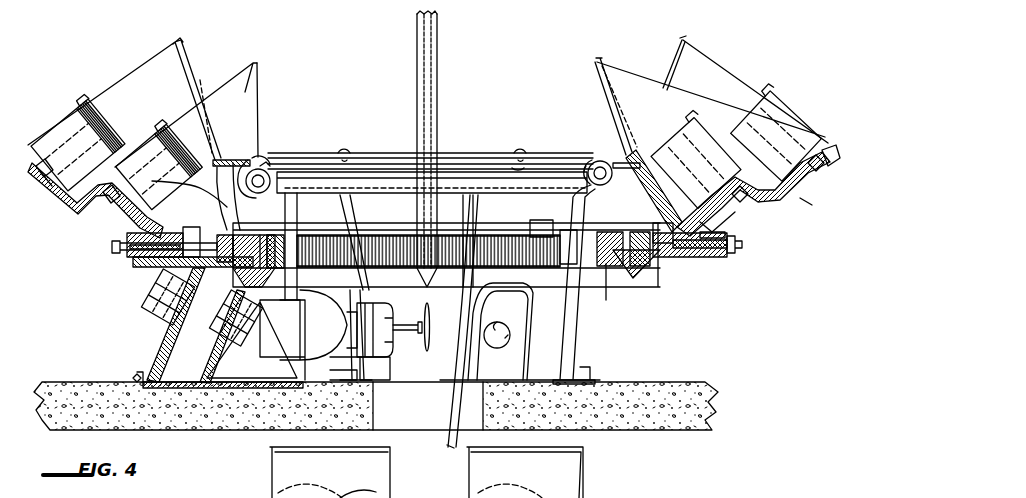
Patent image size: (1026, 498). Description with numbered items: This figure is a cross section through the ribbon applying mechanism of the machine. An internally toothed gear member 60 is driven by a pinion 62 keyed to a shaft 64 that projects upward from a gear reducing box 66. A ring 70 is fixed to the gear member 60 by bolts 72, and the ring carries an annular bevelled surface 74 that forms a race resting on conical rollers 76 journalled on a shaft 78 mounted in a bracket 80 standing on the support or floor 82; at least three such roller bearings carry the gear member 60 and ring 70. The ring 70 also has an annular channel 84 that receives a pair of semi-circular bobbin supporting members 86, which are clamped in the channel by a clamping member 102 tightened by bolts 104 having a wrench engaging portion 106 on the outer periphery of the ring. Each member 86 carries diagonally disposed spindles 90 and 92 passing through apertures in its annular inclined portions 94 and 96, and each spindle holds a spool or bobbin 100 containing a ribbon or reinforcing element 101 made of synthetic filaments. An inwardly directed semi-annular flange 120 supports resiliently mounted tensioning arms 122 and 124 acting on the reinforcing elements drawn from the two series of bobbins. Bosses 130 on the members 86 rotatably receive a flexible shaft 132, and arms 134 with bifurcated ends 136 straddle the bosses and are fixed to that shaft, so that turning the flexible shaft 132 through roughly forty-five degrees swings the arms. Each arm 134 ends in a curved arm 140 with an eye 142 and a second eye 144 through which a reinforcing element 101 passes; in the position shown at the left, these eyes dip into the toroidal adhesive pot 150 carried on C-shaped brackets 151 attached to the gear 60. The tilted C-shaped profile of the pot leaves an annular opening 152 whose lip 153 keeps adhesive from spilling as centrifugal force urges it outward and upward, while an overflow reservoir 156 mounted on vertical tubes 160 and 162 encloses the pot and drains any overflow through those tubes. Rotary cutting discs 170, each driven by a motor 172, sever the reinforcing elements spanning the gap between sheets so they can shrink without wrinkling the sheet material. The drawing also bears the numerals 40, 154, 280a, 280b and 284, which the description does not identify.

The saw blade 40 is at (417, 68).
The internally toothed gear member 60 is at (601, 237).
The pinion 62 is at (304, 242).
The shaft 64 is at (300, 280).
The gear reducing box 66 is at (276, 327).
The ring 70 is at (608, 286).
The bolts 72 is at (638, 236).
The annular bevelled surface 74 is at (640, 278).
The conical rollers or bearings 76 is at (156, 273).
The shaft 78 is at (161, 318).
The bracket 80 is at (160, 341).
The support or floor 82 is at (96, 392).
The annular channel 84 is at (713, 258).
The semi-circular bobbin supporting members 86 is at (778, 212).
The spindles 90 is at (720, 222).
The spindles 92 is at (805, 188).
The annular inclined portion 94 is at (723, 240).
The annular inclined portion 96 is at (834, 152).
The spool or bobbin 100 is at (68, 116).
The ribbon or reinforcing element 101 is at (620, 80).
The clamping member 102 is at (676, 248).
The bolts 104 is at (716, 268).
The wrench engaging portion 106 is at (741, 251).
The inwardly directed semi-annular flange 120 is at (608, 183).
The tensioning arms 122 is at (596, 97).
The tensioning arms 124 is at (193, 76).
The bosses 130 is at (252, 159).
The flexible shaft 132 is at (453, 152).
The arms 134 is at (263, 158).
The bifurcated end 136 is at (632, 158).
The curved arm 140 is at (270, 162).
The eye 142 is at (432, 183).
The second eye 144 is at (245, 196).
The toroidal adhesive container or pot 150 is at (360, 169).
The C-shaped brackets 151 is at (176, 188).
The annular opening 152 is at (472, 173).
The lip 153 is at (261, 162).
The hook 154 is at (584, 168).
The overflow reservoir 156 is at (388, 208).
The vertical tube 160 is at (572, 217).
The vertical tube 162 is at (335, 222).
The rotary cutting discs 170 is at (430, 326).
The motor 172 is at (387, 356).
The container 280a is at (270, 475).
The container 280b is at (585, 467).
The pile 284 is at (408, 476).